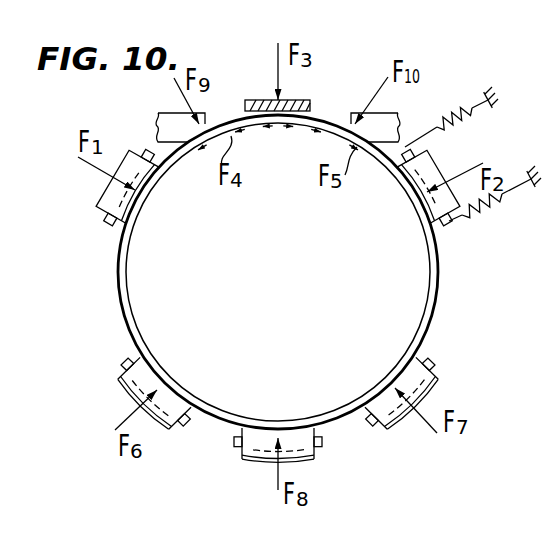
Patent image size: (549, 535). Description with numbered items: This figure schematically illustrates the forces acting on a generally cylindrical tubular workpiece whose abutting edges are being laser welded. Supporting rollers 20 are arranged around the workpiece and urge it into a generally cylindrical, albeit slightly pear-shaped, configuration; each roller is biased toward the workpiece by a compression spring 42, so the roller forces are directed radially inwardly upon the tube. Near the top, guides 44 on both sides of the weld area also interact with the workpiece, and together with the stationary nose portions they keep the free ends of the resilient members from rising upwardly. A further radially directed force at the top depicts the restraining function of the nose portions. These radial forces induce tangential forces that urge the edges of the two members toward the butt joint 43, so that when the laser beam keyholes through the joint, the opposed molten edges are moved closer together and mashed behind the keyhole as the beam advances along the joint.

The supporting rollers 20 is at (100, 208).
The compression springs 42 is at (462, 108).
The butt joint 43 is at (279, 113).
The guides 44 is at (175, 113).